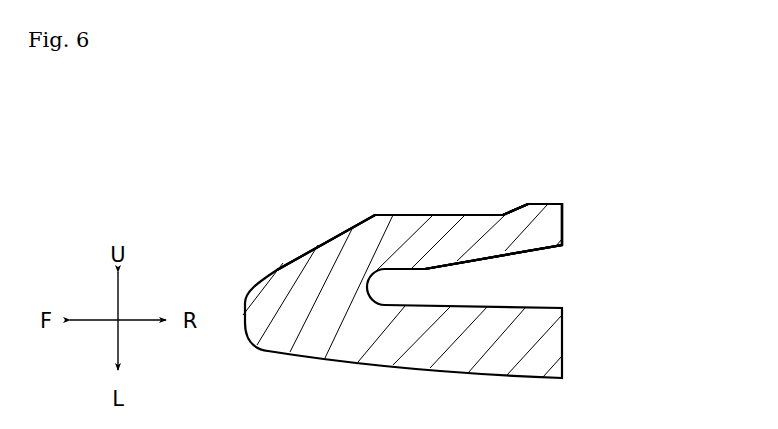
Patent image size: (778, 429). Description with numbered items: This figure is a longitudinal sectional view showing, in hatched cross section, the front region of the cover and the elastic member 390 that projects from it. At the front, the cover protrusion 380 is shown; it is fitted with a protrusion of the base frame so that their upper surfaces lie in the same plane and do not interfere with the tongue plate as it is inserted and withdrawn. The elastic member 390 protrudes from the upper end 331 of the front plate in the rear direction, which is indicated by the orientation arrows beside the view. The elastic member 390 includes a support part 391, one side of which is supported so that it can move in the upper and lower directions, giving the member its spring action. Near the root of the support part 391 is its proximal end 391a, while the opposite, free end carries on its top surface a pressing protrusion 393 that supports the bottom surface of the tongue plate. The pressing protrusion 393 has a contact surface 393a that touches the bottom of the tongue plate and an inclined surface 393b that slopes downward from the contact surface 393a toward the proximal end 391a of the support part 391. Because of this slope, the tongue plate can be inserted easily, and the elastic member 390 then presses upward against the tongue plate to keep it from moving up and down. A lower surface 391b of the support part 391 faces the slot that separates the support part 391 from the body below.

The cover protrusion 380 is at (282, 269).
The elastic member 390 is at (498, 203).
The support part 391 is at (432, 233).
The proximal end of the support part 391a is at (388, 238).
The lower surface of protruding portion 391b is at (532, 255).
The upper end of the front plate 331 is at (393, 215).
The pressing protrusion 393 is at (543, 96).
The contact surface 393a is at (542, 203).
The inclined surface 393b is at (515, 207).